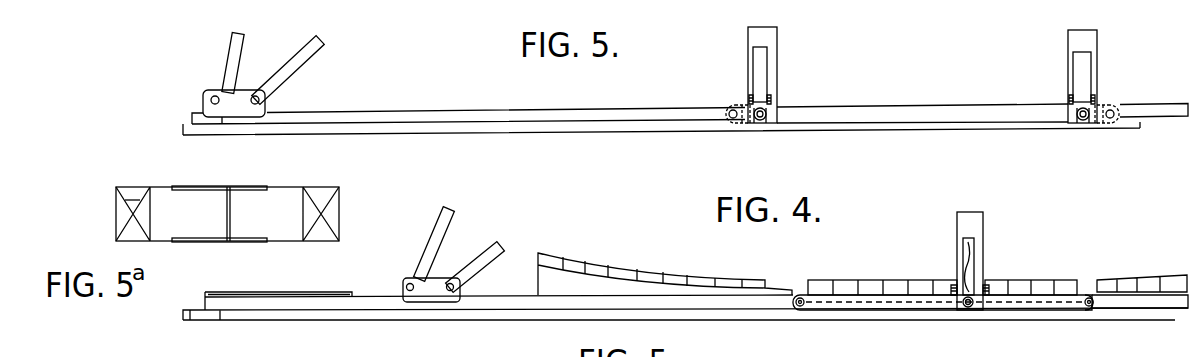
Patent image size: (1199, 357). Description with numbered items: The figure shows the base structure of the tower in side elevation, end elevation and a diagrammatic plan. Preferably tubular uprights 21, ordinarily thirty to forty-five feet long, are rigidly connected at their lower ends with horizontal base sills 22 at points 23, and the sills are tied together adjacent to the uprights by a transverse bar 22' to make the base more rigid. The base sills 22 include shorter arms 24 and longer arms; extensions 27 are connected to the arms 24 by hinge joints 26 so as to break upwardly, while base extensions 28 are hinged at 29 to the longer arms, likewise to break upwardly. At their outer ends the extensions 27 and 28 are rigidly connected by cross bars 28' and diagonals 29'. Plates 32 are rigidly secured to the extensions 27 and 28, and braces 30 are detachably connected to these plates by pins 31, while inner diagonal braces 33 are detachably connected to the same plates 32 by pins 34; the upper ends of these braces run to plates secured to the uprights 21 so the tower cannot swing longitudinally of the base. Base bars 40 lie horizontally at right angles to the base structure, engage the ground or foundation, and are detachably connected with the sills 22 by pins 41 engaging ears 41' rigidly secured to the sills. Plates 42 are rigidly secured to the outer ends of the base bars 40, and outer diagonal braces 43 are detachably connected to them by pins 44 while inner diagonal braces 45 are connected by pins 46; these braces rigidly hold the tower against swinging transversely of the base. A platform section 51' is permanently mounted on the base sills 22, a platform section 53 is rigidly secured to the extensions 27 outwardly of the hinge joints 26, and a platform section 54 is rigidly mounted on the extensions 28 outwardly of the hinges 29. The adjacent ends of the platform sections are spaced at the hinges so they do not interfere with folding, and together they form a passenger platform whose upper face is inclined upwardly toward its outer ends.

In FIG. 5, the uprights 21 is at (783, 50).
In FIG. 4, the uprights 21 is at (985, 226).
In FIG. 5A, the uprights 21 is at (229, 187).
In FIG. 4, the horizontal base sills 22 is at (943, 319).
In FIG. 5A, the horizontal base sills 22 is at (220, 211).
In FIG. 5, the transverse bar 22' is at (922, 100).
In FIG. 4, the points 23 is at (954, 286).
In FIG. 4, the arms 24 is at (1070, 306).
In FIG. 4, the hinge joints 26 is at (1093, 306).
In FIG. 4, the extensions 27 is at (1163, 309).
In FIG. 5A, the extensions 27 is at (319, 187).
In FIG. 5, the base extensions 28 is at (929, 131).
In FIG. 4, the base extensions 28 is at (685, 319).
In FIG. 5A, the base extensions 28 is at (227, 199).
In FIG. 5A, the cross bars 28' is at (234, 216).
In FIG. 4, the hinges 29 is at (802, 279).
In FIG. 4, the diagonals 29' is at (278, 283).
In FIG. 5A, the diagonals 29' is at (214, 226).
In FIG. 5, the braces 30 is at (758, 65).
In FIG. 4, the braces 30 is at (430, 246).
In FIG. 5, the pins 31 is at (775, 95).
In FIG. 4, the pins 31 is at (406, 286).
In FIG. 5, the plates 32 is at (775, 92).
In FIG. 4, the plates 32 is at (440, 303).
In FIG. 4, the inner diagonal braces 33 is at (486, 251).
In FIG. 4, the pins 34 is at (466, 290).
In FIG. 5, the base bars 40 is at (580, 110).
In FIG. 4, the base bars 40 is at (968, 311).
In FIG. 5, the pins 41 is at (923, 128).
In FIG. 5, the ears 41' is at (930, 96).
In FIG. 4, the ears 41' is at (1008, 349).
In FIG. 5, the plates 42 is at (241, 90).
In FIG. 4, the plates 42 is at (975, 256).
In FIG. 5, the outer diagonal braces 43 is at (243, 47).
In FIG. 4, the outer diagonal braces 43 is at (963, 245).
In FIG. 5, the pins 44 is at (210, 98).
In FIG. 5, the inner diagonal braces 45 is at (320, 48).
In FIG. 5, the pins 46 is at (262, 100).
In FIG. 4, the platform section 51' is at (882, 272).
In FIG. 4, the platform section 53 is at (1143, 282).
In FIG. 4, the platform section 54 is at (655, 270).